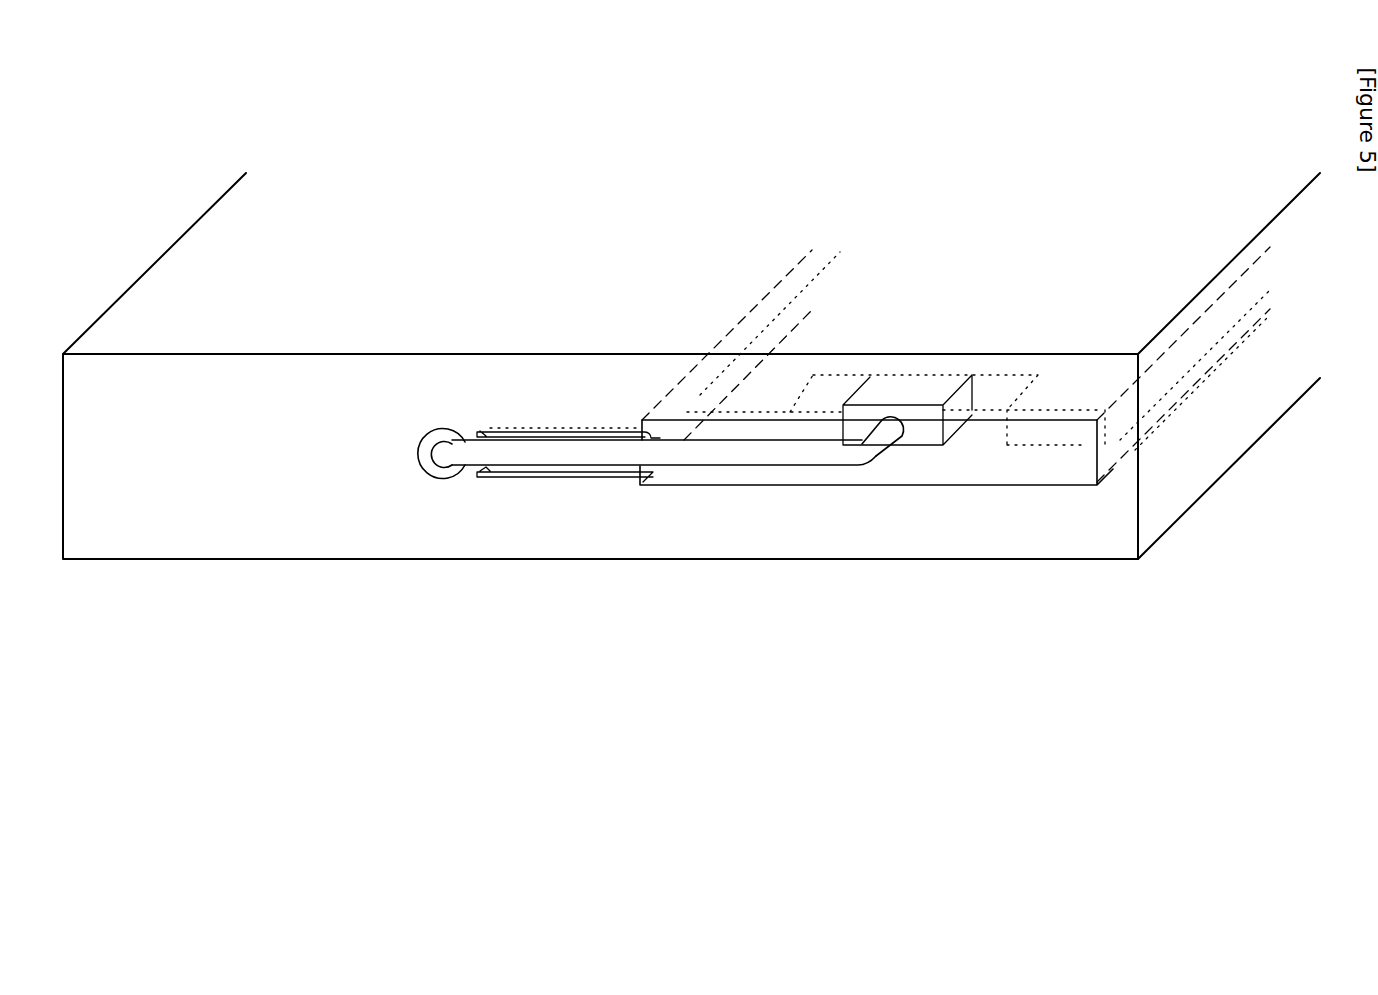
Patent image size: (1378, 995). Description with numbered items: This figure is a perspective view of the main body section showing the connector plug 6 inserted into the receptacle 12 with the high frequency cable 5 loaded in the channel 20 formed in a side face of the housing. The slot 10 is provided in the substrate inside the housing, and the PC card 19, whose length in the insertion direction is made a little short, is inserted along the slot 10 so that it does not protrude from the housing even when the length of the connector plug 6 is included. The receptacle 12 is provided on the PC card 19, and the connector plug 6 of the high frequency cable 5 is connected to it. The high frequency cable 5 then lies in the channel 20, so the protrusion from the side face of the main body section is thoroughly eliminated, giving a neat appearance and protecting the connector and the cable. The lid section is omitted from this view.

The high frequency cable 5 is at (787, 460).
The connector plug 6 is at (900, 440).
The slot 10 is at (443, 430).
The receptacle 12 is at (918, 392).
The PC card 19 is at (702, 398).
The channel 20 is at (549, 425).